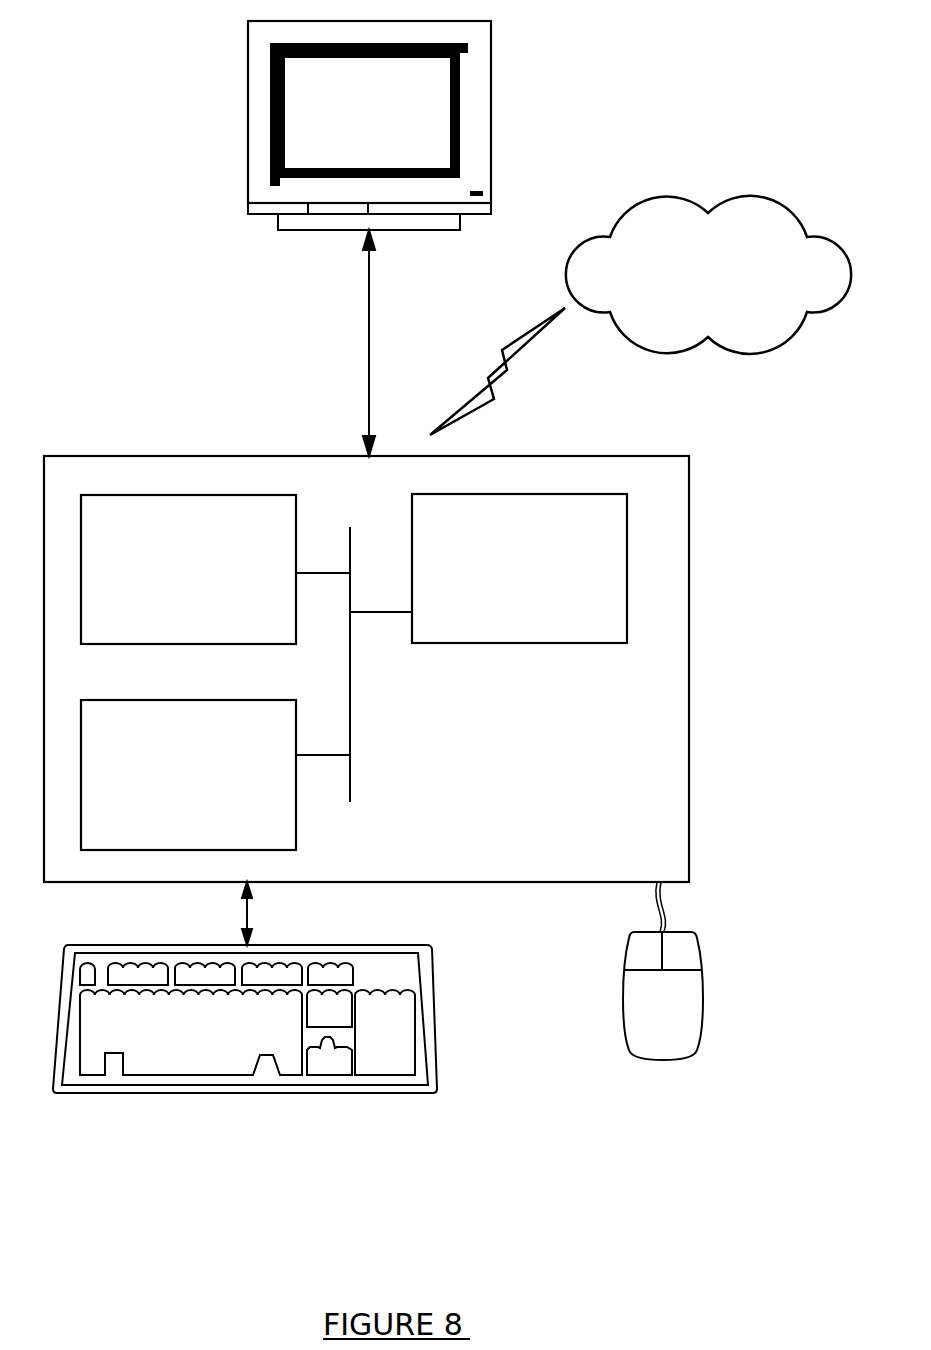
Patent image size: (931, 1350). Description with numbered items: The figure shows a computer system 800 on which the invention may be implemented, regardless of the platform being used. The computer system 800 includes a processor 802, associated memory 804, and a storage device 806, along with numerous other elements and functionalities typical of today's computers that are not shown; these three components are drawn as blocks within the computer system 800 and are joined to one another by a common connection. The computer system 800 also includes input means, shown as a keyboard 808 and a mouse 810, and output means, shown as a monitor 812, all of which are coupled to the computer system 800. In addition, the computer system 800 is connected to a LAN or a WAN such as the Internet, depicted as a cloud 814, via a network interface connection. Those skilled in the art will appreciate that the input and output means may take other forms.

The computer system 800 is at (712, 714).
The processor 802 is at (516, 579).
The memory 804 is at (168, 579).
The storage device 806 is at (168, 784).
The keyboard 808 is at (163, 1056).
The mouse 810 is at (645, 1011).
The monitor 812 is at (341, 129).
The LAN or WAN 814 is at (703, 284).